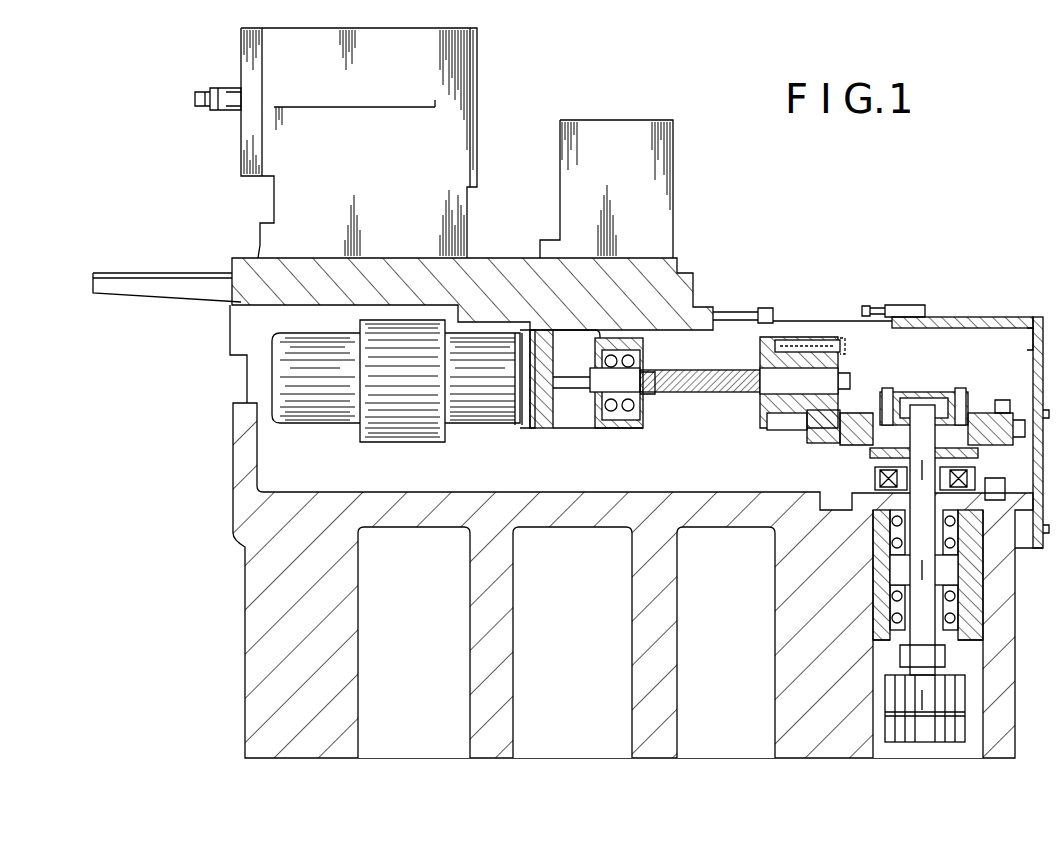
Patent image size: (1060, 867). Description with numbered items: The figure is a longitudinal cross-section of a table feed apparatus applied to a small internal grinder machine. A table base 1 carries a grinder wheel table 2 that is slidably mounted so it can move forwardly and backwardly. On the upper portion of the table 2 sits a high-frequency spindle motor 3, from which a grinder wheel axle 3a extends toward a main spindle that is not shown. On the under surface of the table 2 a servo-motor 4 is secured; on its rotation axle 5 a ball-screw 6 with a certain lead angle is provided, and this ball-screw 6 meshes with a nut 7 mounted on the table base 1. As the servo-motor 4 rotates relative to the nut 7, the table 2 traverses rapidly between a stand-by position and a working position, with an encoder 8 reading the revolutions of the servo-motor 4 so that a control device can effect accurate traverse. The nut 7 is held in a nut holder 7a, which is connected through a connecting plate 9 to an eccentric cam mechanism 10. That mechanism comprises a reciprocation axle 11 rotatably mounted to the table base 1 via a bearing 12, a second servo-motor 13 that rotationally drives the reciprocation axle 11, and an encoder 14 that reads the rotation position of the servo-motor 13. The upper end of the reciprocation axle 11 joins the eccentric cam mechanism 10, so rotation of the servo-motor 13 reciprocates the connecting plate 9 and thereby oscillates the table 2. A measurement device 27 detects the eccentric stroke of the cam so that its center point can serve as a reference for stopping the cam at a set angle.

The table base 1 is at (236, 478).
The grinder wheel table 2 is at (677, 262).
The high-frequency spindle motor 3 is at (274, 136).
The grinder wheel axle 3a is at (194, 97).
The servo-motor 4 is at (390, 425).
The rotation axle 5 is at (573, 395).
The ball-screw 6 is at (735, 368).
The nut 7 is at (760, 405).
The nut holder 7a is at (832, 343).
The encoder 8 is at (298, 413).
The connecting plate 9 is at (782, 432).
The eccentric cam mechanism 10 is at (910, 395).
The reciprocation axle 11 is at (958, 578).
The bearing 12 is at (960, 548).
The servo-motor 13 is at (898, 708).
The encoder 14 is at (965, 725).
The measurement device 27 is at (905, 305).